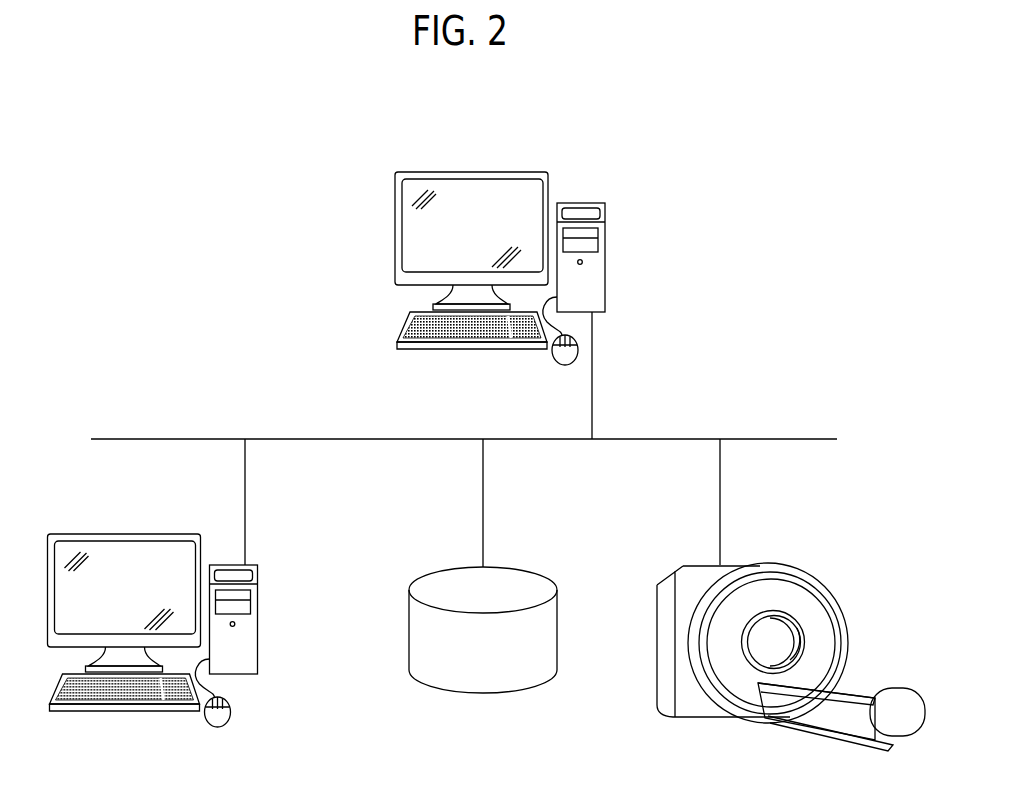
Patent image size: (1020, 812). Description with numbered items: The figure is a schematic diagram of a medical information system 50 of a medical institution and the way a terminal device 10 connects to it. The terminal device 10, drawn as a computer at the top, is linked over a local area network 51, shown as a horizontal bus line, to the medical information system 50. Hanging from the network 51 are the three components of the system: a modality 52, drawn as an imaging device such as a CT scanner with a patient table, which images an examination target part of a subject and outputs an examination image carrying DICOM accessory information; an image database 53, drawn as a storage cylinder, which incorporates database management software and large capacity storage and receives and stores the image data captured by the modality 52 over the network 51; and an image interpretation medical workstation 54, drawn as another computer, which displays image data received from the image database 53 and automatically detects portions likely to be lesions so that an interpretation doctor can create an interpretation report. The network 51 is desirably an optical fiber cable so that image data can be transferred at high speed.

The terminal device 10 is at (590, 203).
The medical information system 50 is at (788, 134).
The local area network 51 is at (797, 438).
The modality 52 is at (707, 717).
The image database 53 is at (515, 692).
The image interpretation medical workstation 54 is at (250, 674).